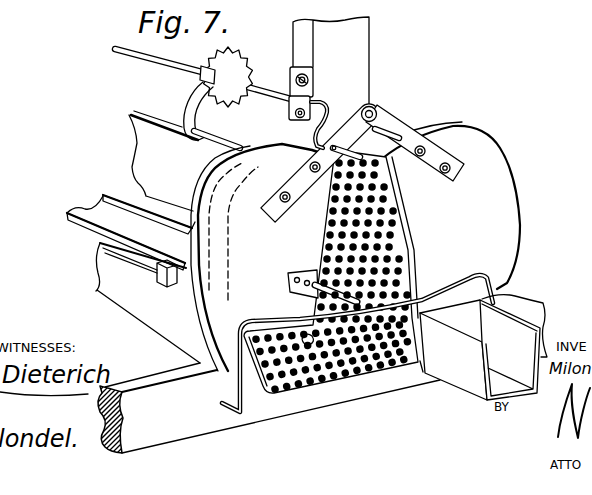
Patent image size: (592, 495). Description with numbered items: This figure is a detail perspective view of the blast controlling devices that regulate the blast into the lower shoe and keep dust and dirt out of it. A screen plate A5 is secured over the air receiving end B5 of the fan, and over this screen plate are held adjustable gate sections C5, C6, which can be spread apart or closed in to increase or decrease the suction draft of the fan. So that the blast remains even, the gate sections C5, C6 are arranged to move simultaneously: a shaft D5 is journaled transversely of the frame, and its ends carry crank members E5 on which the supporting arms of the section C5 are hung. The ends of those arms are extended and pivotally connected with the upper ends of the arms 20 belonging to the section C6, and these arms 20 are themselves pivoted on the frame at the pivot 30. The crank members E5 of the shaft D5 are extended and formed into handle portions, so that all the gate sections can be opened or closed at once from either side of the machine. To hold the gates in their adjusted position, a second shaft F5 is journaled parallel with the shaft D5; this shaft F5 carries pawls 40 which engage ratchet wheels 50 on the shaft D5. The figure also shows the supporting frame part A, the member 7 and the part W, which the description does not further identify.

The shaft D5 is at (141, 58).
The ratchet wheel 50 is at (228, 77).
The second shaft F5 is at (162, 99).
The air receiving end of the fan B5 is at (233, 137).
The pawl 40 is at (178, 131).
The shelf support 7 is at (152, 180).
The adjustable gate section C5 is at (259, 257).
The adjustable gate section C6 is at (451, 205).
The screen plate A5 is at (352, 370).
The arm of the gate section 20 is at (381, 115).
The pivot 30 is at (414, 126).
The crank member E5 is at (232, 158).
The base beam A is at (265, 420).
The receptacle W is at (483, 347).